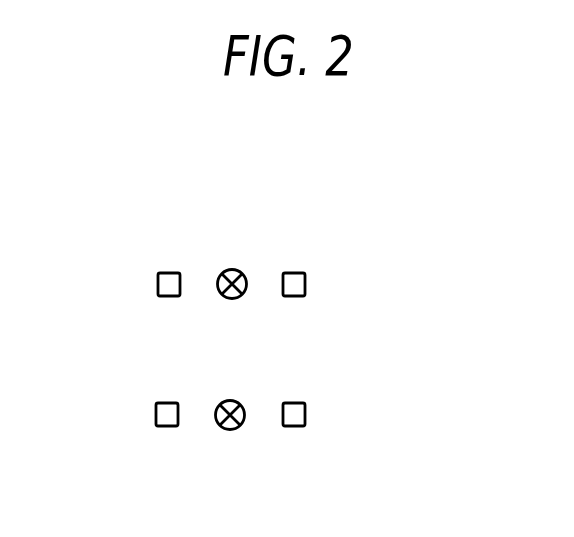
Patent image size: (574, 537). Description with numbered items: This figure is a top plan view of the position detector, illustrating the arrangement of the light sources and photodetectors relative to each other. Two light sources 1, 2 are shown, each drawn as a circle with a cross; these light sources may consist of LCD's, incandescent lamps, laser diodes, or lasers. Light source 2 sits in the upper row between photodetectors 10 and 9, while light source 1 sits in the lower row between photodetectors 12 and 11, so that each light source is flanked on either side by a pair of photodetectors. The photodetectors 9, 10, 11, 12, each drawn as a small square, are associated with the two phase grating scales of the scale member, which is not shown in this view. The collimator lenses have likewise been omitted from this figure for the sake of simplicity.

The light source 1 is at (231, 430).
The light source 2 is at (232, 269).
The photodetector 9 is at (290, 270).
The photodetector 10 is at (166, 272).
The photodetector 11 is at (307, 412).
The photodetector 12 is at (153, 415).